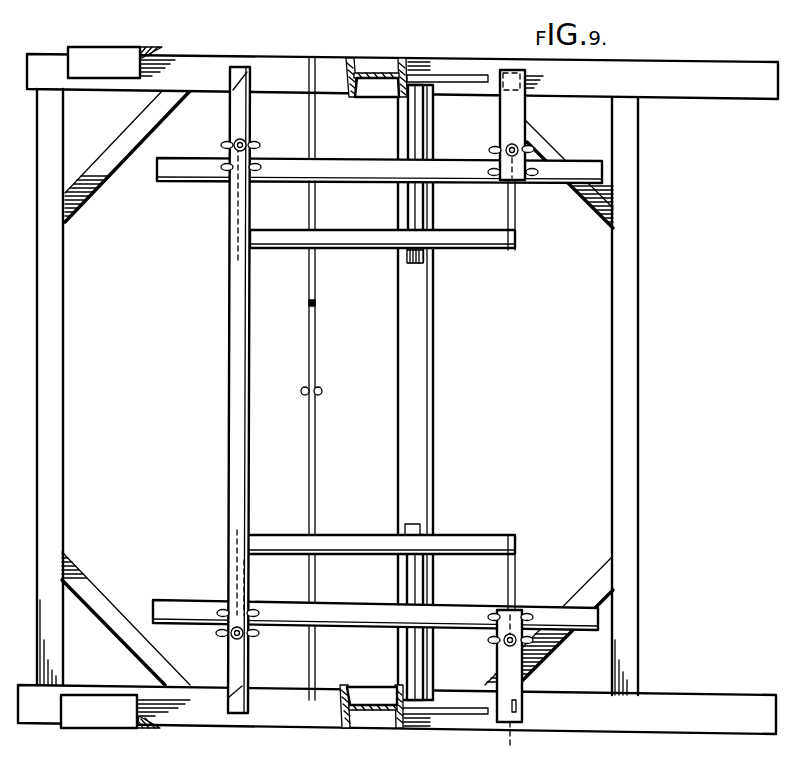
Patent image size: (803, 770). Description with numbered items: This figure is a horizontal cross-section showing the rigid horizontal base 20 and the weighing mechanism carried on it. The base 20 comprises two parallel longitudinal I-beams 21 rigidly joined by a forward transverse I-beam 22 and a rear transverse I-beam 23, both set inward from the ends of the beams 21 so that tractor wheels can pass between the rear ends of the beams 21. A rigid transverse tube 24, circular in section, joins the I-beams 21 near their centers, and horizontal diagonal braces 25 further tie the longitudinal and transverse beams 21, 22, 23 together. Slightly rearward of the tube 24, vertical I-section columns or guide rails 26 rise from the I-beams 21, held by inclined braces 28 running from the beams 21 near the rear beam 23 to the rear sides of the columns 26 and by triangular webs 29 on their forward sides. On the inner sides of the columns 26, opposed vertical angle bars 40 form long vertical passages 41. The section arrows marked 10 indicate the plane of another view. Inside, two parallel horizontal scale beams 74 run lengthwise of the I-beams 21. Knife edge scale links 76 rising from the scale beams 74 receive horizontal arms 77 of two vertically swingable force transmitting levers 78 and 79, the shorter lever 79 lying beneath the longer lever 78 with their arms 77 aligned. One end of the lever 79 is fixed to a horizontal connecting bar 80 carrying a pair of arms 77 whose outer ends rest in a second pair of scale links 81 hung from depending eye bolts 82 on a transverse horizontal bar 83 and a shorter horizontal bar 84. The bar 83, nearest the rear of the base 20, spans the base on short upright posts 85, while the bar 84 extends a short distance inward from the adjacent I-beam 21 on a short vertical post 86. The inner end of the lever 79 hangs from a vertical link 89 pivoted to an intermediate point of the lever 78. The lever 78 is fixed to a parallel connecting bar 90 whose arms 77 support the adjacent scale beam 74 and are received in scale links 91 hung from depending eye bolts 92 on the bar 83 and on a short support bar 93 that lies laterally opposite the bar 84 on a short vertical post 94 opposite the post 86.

The section line 10 is at (269, 158).
The horizontal base 20 is at (470, 54).
The longitudinal I-beams 21 is at (705, 68).
The forward transverse I-beam 22 is at (640, 528).
The rear transverse I-beam 23 is at (65, 455).
The transverse tube 24 is at (433, 368).
The horizontal diagonal braces 25 is at (123, 142).
The vertical columns 26 is at (364, 394).
The inclined braces 28 is at (92, 54).
The triangular webs 29 is at (438, 74).
The vertical angle bars 40 is at (398, 96).
The vertical passages 41 is at (367, 82).
The scale beams 74 is at (355, 162).
The knife edge scale links 76 is at (224, 171).
The horizontal arms 77 is at (233, 210).
The force transmitting lever 78 is at (320, 217).
The force transmitting lever 79 is at (322, 339).
The connecting bar 80 is at (486, 246).
The knife edge scale links 81 is at (222, 145).
The depending eye bolts 82 is at (244, 142).
The transverse horizontal bar 83 is at (233, 350).
The horizontal bar 84 is at (523, 117).
The upright posts 85 is at (240, 95).
The vertical post 86 is at (527, 80).
The vertical link 89 is at (304, 387).
The connecting bar 90 is at (470, 542).
The scale links 91 is at (217, 634).
The depending eye bolts 92 is at (233, 640).
The support bar 93 is at (520, 683).
The vertical post 94 is at (524, 743).